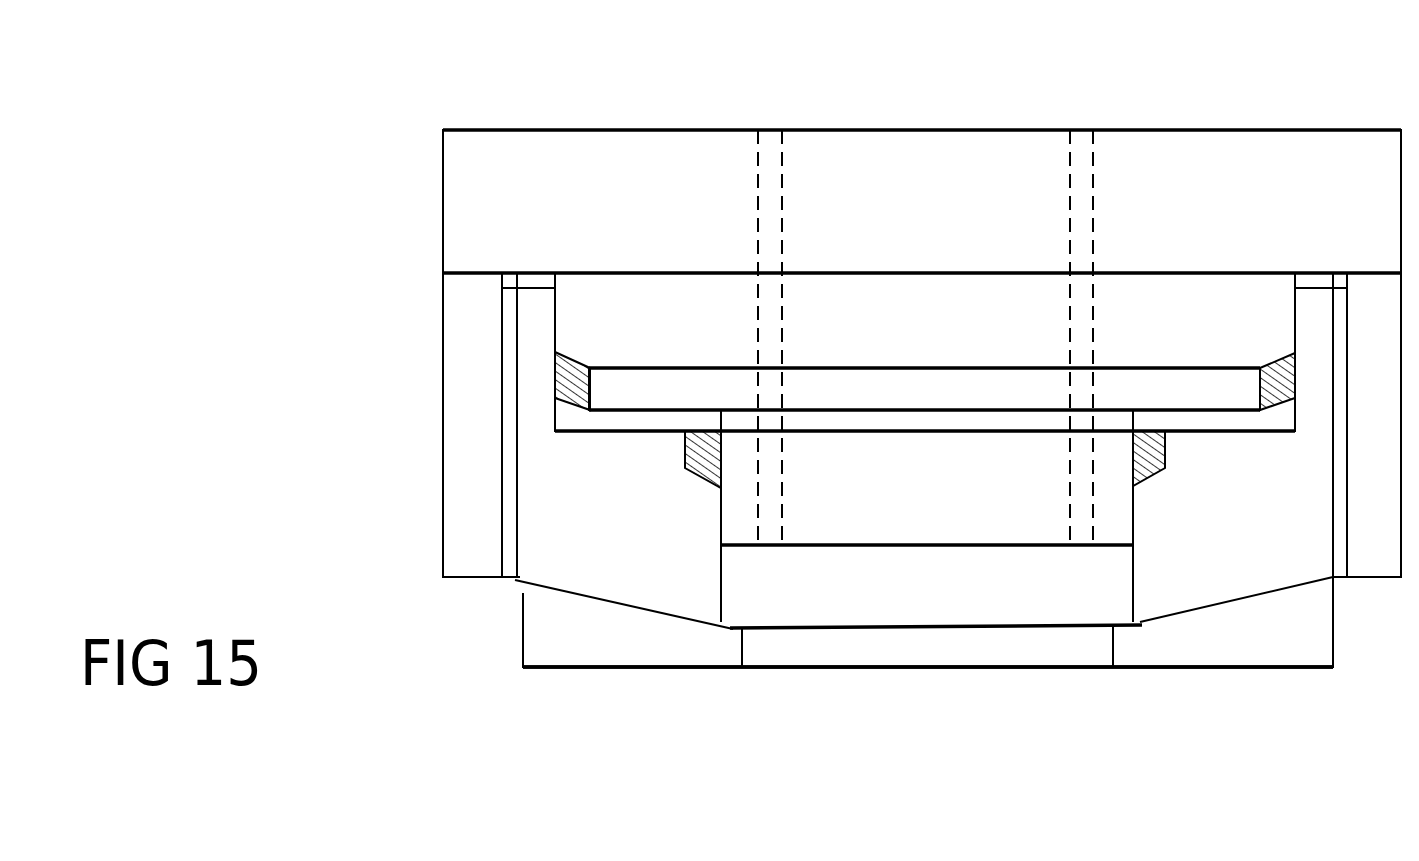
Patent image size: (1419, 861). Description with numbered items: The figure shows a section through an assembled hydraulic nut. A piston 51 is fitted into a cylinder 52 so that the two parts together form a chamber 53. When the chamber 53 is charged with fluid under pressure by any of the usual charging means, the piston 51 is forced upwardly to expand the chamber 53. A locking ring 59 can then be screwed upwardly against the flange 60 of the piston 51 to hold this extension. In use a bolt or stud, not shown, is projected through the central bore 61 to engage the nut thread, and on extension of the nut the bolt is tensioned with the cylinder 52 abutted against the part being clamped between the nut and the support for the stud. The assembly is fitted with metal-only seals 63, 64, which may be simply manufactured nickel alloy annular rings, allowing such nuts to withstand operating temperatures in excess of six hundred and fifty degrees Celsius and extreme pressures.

The piston 51 is at (688, 305).
The cylinder 52 is at (587, 558).
The chamber 53 is at (622, 423).
The locking ring 59 is at (463, 372).
The flange 60 is at (470, 198).
The central bore 61 is at (1023, 110).
The metal only seal 63 is at (1270, 366).
The metal only seal 64 is at (1160, 470).